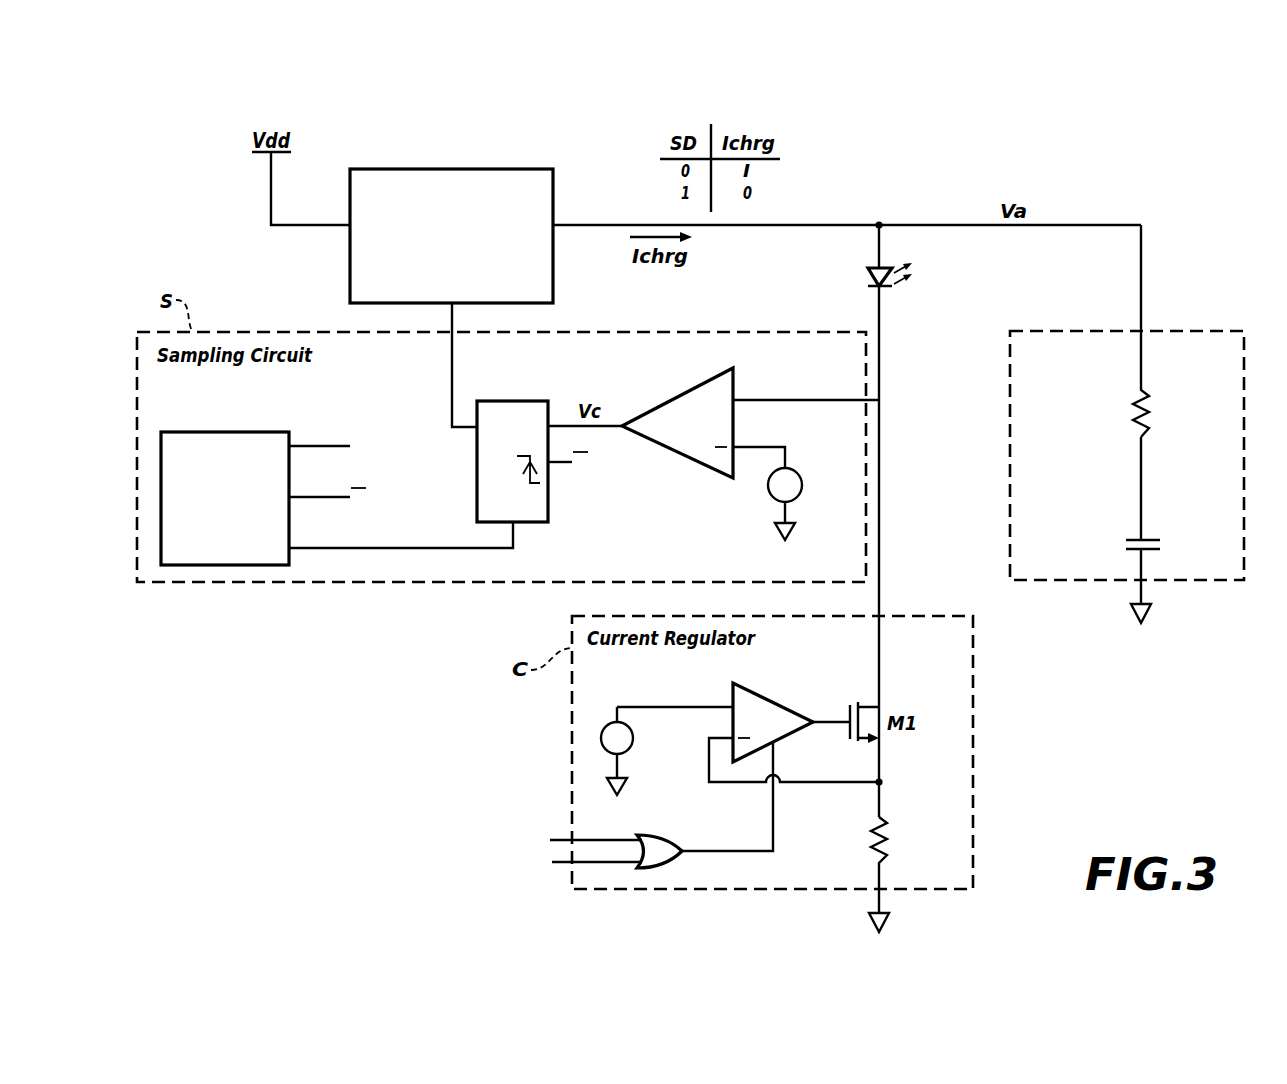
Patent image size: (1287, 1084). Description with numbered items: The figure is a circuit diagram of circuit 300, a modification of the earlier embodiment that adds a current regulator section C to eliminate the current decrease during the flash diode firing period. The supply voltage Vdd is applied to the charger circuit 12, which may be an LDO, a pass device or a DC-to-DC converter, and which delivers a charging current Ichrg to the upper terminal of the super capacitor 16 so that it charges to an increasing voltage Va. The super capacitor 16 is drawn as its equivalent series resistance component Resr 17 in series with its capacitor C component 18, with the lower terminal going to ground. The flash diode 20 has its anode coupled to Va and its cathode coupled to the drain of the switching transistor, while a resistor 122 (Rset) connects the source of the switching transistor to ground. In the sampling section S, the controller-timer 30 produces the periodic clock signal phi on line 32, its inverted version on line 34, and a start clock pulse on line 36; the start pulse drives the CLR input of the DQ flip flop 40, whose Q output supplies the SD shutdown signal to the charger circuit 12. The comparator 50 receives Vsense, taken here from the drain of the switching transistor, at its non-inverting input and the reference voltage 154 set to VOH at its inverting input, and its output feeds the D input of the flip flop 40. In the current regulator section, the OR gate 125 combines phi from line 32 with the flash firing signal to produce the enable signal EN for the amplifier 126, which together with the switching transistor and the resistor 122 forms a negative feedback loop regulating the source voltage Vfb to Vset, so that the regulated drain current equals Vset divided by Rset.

The charger circuit 12 is at (512, 169).
The circuit 300 is at (1196, 180).
The flash diode 20 is at (876, 268).
The super capacitor 16 is at (1050, 331).
The equivalent series resistance component Resr 17 is at (1152, 398).
The capacitor C component 18 is at (1162, 547).
The controller-timer 30 is at (196, 432).
The line 32 is at (306, 446).
The line 34 is at (306, 497).
The line 36 is at (306, 548).
The flip flop 40 is at (477, 482).
The comparator 50 is at (679, 396).
The reference voltage 154 is at (800, 477).
The amplifier 126 is at (774, 702).
The OR gate 125 is at (672, 836).
The resistor 122 is at (892, 830).